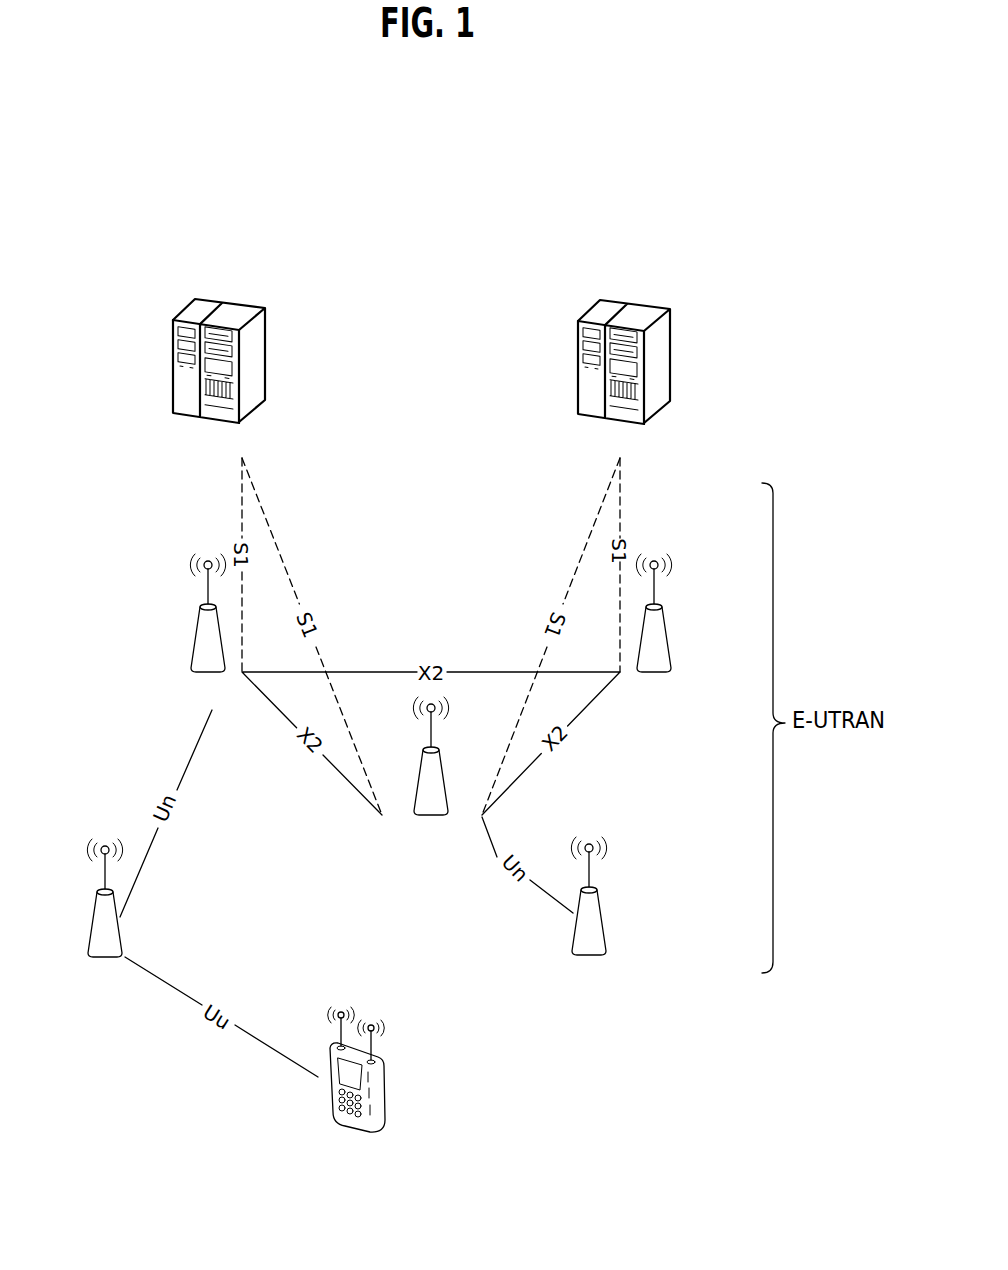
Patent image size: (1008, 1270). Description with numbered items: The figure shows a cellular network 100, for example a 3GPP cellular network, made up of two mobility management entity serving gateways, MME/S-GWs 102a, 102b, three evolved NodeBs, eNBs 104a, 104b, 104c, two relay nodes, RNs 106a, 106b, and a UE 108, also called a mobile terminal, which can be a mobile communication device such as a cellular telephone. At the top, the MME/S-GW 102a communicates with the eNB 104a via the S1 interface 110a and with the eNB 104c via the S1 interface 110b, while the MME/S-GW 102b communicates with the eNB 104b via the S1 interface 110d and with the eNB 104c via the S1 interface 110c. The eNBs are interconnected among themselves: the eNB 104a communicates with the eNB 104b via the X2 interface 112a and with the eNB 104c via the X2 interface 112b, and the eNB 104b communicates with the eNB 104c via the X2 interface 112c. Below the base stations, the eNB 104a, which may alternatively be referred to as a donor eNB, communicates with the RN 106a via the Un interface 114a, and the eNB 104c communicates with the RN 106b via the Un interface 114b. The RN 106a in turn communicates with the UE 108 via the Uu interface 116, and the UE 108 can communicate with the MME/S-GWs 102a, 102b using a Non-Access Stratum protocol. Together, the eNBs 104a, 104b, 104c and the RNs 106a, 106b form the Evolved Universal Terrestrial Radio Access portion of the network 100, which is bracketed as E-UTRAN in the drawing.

The network 100 is at (775, 258).
The mobility management entity serving gateway (MME/S-GW) 102a is at (243, 305).
The mobility management entity serving gateway (MME/S-GW) 102b is at (649, 305).
The evolved NodeB (eNB) 104a is at (196, 636).
The evolved NodeB (eNB) 104b is at (668, 634).
The evolved NodeB (eNB) 104c is at (413, 812).
The relay node (RN) 106a is at (120, 928).
The relay node (RN) 106b is at (604, 918).
The UE 108 is at (385, 1093).
The S1 interface 110a is at (242, 497).
The S1 interface 110b is at (281, 555).
The S1 interface 110c is at (582, 555).
The S1 interface 110d is at (620, 487).
The X2 interface 112a is at (470, 666).
The X2 interface 112b is at (337, 771).
The X2 interface 112c is at (597, 700).
The Un interface 114a is at (189, 762).
The Un interface 114b is at (550, 903).
The Uu interface 116 is at (262, 1041).